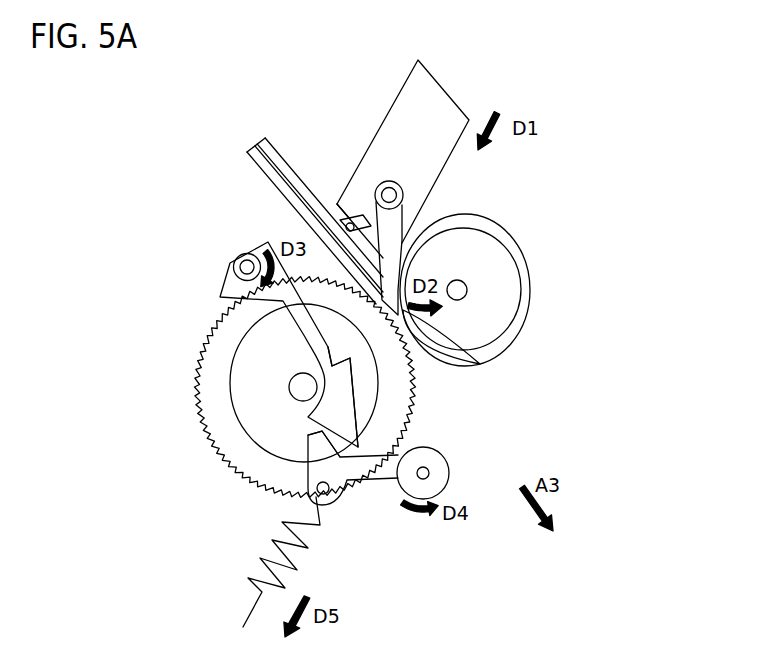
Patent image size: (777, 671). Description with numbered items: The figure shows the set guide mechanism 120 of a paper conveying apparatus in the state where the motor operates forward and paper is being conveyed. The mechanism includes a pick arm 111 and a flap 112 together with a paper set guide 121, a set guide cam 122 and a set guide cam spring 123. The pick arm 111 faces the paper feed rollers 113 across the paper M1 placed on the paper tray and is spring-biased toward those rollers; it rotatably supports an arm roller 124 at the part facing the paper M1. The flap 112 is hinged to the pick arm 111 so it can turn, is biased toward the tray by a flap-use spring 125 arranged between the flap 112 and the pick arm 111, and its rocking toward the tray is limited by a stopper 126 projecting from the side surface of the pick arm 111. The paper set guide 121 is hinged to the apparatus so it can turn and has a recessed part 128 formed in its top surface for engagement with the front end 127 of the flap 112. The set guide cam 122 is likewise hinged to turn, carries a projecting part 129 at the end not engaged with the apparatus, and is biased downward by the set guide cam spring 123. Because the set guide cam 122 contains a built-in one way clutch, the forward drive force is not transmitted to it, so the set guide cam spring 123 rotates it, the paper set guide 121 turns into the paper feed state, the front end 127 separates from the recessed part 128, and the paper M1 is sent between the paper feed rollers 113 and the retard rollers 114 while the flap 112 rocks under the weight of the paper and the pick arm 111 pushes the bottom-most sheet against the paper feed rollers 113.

The set guide mechanism 120 is at (604, 98).
The pick arm 111 is at (430, 101).
The paper M1 is at (277, 152).
The flap 112 is at (362, 210).
The stopper 126 is at (357, 214).
The arm roller 124 is at (346, 228).
The flap-use spring 125 is at (404, 184).
The retard rollers 114 is at (506, 276).
The front end 127 is at (480, 364).
The paper feed rollers 113 is at (240, 396).
The paper set guide 121 is at (245, 285).
The recessed part 128 is at (334, 368).
The projecting part 129 is at (318, 430).
The set guide cam 122 is at (345, 477).
The set guide cam spring 123 is at (272, 540).